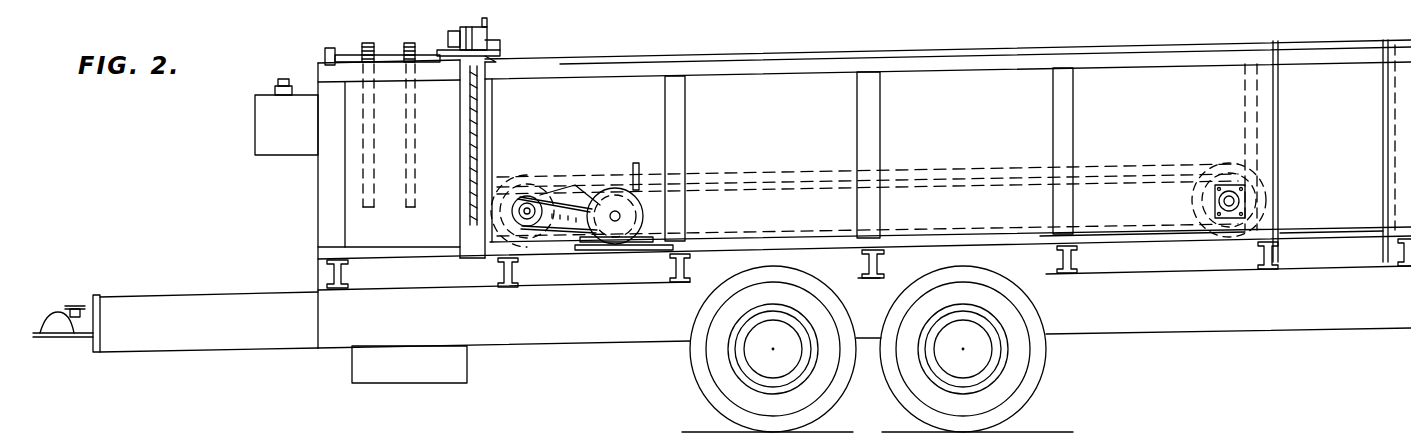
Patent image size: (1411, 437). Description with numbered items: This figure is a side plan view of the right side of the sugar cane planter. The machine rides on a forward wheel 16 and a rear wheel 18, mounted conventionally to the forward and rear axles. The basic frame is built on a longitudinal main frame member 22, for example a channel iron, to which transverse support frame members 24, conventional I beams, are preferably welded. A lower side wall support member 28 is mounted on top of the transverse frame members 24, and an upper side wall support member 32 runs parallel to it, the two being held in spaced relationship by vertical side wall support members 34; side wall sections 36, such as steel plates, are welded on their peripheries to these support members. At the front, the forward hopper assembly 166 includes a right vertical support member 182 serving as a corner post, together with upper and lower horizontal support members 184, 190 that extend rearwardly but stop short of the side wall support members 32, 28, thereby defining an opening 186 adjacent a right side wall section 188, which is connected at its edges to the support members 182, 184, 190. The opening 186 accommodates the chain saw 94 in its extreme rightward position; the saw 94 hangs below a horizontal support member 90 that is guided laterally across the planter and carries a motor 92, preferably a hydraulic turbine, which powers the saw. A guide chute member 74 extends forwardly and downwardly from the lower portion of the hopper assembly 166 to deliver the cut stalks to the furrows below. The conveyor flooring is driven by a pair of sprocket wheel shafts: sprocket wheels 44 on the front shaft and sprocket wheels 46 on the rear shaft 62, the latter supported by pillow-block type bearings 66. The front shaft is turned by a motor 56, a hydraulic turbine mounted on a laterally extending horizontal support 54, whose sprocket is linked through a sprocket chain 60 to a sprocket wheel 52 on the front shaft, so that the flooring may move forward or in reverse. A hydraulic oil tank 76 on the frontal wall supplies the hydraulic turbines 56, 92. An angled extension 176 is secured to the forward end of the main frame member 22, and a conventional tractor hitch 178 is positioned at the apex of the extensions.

The forward wheel 16 is at (691, 384).
The rear wheel 18 is at (1030, 375).
The main frame member 22 is at (1298, 331).
The support frame member 24 is at (497, 278).
The lower side wall support member 28 is at (1333, 230).
The upper side wall support member 32 is at (553, 62).
The vertical side wall support member 34 is at (1058, 107).
The side wall section 36 is at (762, 100).
The sprocket wheel 44 is at (517, 177).
The sprocket wheel 46 is at (1228, 165).
The sprocket wheel 52 is at (518, 230).
The horizontal support 54 is at (615, 251).
The motor 56 is at (645, 216).
The sprocket chain 60 is at (573, 197).
The sprocket wheel driving shaft 62 is at (1218, 197).
The pillow-block type bearing 66 is at (1229, 220).
The guide chute member 74 is at (352, 372).
The hydraulic oil tank 76 is at (255, 117).
The horizontal support member 90 is at (447, 60).
The motor 92 is at (490, 34).
The chain saw 94 is at (473, 162).
The forward hopper assembly 166 is at (280, 212).
The angled extension 176 is at (190, 350).
The tractor hitch 178 is at (62, 338).
The vertical support member 182 is at (318, 176).
The upper horizontal support member 184 is at (318, 70).
The opening 186 is at (474, 250).
The right side wall section 188 is at (432, 242).
The lower horizontal support member 190 is at (318, 257).